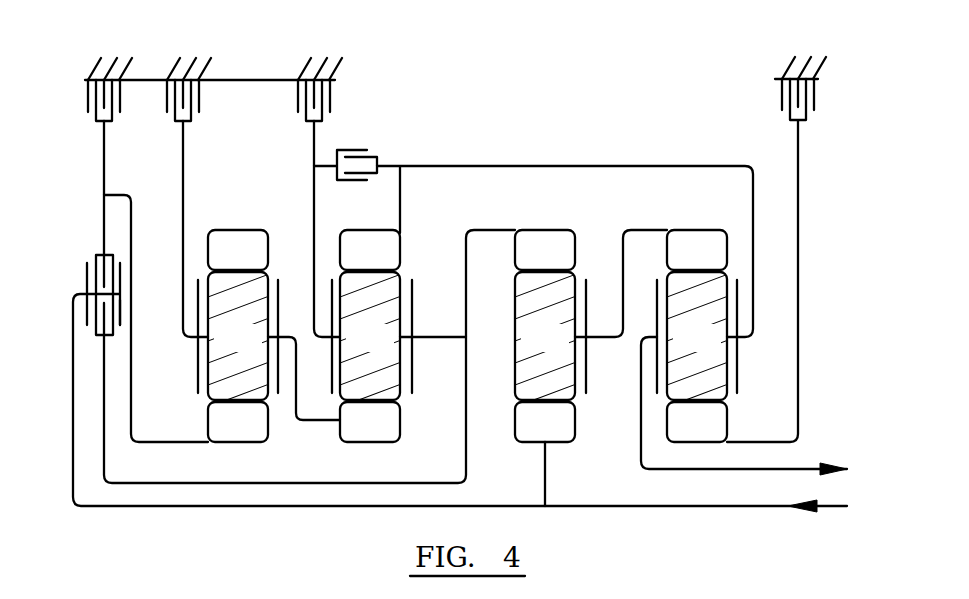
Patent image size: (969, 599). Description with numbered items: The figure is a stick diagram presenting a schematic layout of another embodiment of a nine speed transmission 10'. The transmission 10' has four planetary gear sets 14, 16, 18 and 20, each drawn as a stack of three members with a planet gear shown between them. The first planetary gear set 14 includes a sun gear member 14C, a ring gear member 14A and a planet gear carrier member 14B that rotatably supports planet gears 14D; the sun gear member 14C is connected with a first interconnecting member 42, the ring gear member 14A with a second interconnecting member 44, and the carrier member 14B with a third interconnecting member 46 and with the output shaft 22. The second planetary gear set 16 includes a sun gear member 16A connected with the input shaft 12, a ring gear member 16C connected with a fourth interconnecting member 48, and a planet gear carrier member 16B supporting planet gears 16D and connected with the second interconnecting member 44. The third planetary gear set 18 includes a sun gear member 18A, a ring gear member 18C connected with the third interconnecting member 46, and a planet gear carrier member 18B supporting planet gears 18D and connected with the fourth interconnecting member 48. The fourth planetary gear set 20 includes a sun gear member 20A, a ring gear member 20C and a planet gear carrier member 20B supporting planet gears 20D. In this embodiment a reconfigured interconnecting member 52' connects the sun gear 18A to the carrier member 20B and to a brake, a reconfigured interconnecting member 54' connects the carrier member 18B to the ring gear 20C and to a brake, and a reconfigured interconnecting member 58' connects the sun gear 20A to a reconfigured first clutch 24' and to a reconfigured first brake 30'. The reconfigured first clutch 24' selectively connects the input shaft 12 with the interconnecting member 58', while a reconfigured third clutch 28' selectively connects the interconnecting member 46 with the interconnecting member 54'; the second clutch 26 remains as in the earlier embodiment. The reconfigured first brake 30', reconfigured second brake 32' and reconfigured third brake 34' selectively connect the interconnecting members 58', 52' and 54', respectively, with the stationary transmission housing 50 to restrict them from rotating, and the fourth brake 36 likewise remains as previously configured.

The nine speed transmission 10' is at (706, 52).
The input shaft 12 is at (66, 475).
The planetary gear set 14 is at (692, 394).
The ring gear member 14A is at (679, 263).
The planet gear carrier member 14B is at (656, 388).
The sun gear member 14C is at (679, 435).
The planet gears 14D is at (679, 349).
The planetary gear set 16 is at (571, 394).
The sun gear member 16A is at (527, 435).
The planet gear carrier member 16B is at (589, 393).
The ring gear member 16C is at (527, 263).
The planet gears 16D is at (527, 349).
The planetary gear set 18 is at (380, 394).
The sun gear member 18A is at (352, 435).
The planet gear carrier member 18B is at (330, 374).
The ring gear member 18C is at (352, 263).
The planet gears 18D is at (352, 349).
The planetary gear set 20 is at (225, 394).
The sun gear member 20A is at (220, 435).
The planet gear carrier member 20B is at (196, 372).
The ring gear member 20C is at (220, 263).
The planet gears 20D is at (220, 349).
The output shaft 22 is at (743, 472).
The reconfigured first clutch 24' is at (90, 275).
The second clutch 26 is at (120, 319).
The reconfigured third clutch 28' is at (352, 138).
The reconfigured first brake 30' is at (90, 119).
The reconfigured second brake 32' is at (168, 119).
The reconfigured third brake 34' is at (299, 119).
The fourth brake 36 is at (782, 100).
The first interconnecting member 42 is at (798, 195).
The second interconnecting member 44 is at (652, 230).
The third interconnecting member 46 is at (560, 165).
The fourth interconnecting member 48 is at (465, 262).
The transmission housing 50 is at (235, 78).
The reconfigured interconnecting member 52' is at (238, 270).
The reconfigured interconnecting member 54' is at (296, 229).
The reconfigured interconnecting member 58' is at (156, 318).